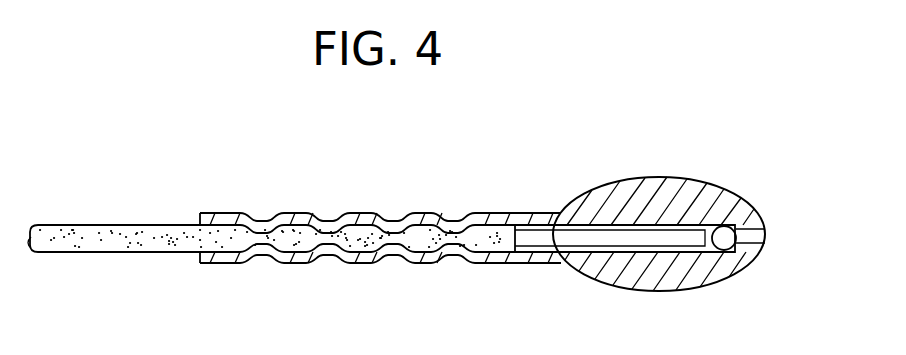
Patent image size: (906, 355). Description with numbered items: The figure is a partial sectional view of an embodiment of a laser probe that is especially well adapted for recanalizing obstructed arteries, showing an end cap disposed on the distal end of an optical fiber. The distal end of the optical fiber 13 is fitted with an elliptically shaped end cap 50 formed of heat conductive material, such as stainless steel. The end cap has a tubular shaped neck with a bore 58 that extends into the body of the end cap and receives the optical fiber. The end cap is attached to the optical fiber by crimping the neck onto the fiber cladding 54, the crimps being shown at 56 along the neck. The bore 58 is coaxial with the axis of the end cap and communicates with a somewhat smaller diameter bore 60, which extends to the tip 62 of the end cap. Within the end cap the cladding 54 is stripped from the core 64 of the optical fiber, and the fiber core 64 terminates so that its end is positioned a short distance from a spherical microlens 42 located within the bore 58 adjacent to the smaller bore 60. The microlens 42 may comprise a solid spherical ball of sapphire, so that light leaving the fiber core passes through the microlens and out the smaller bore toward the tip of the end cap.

The optical fiber 13 is at (271, 241).
The fiber cladding 54 is at (88, 255).
The crimps 56 is at (440, 215).
The core 64 is at (542, 237).
The end cap 50 is at (679, 248).
The bore 58 is at (633, 250).
The spherical microlens 42 is at (723, 249).
The smaller diameter bore 60 is at (766, 237).
The tip 62 is at (757, 262).